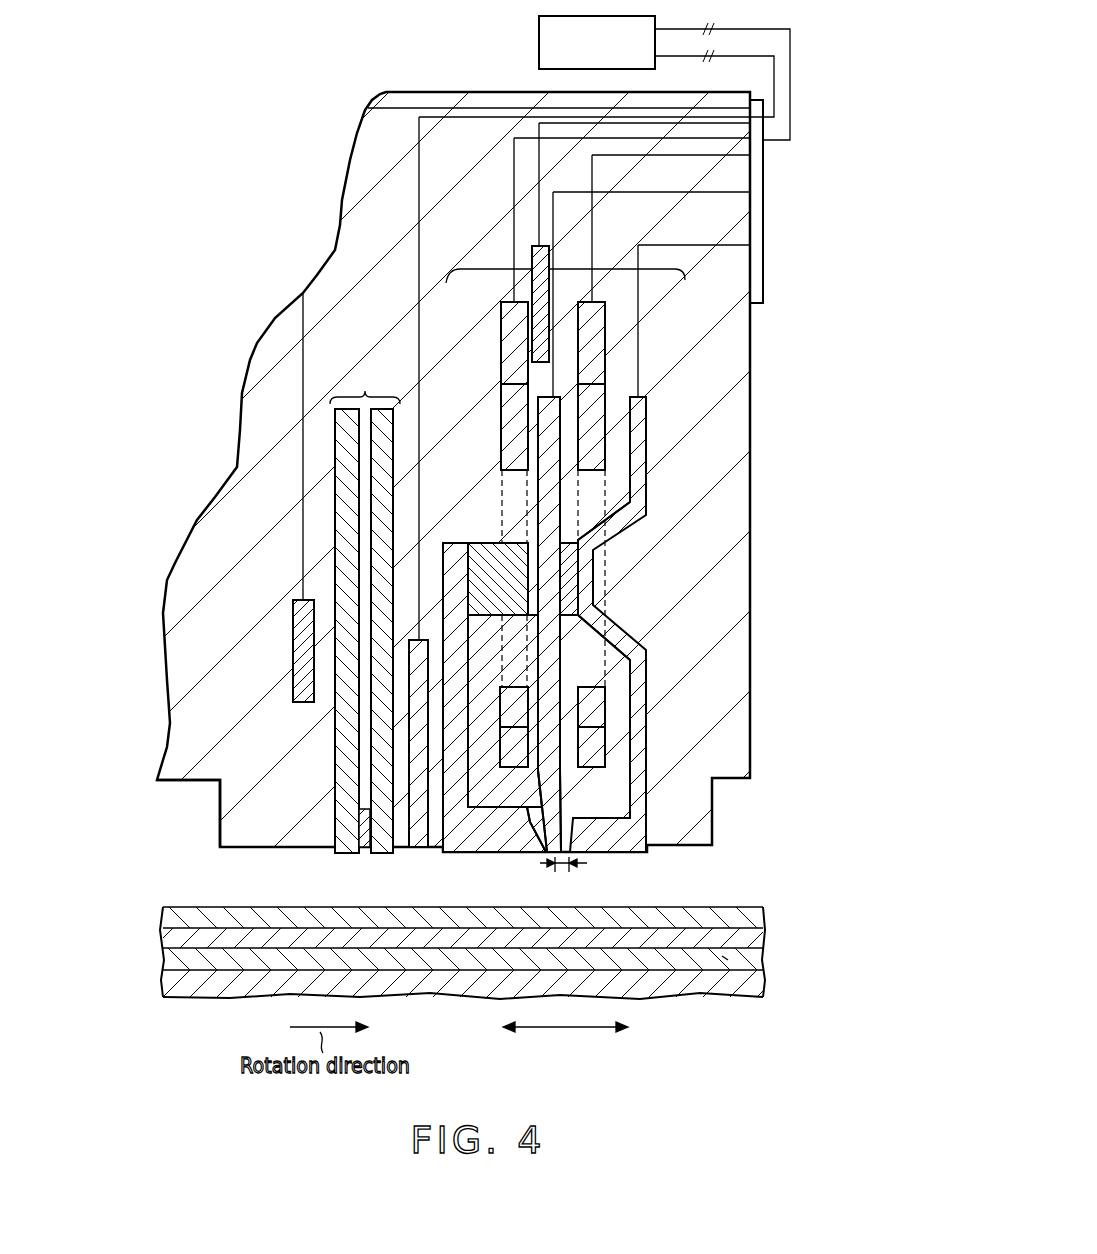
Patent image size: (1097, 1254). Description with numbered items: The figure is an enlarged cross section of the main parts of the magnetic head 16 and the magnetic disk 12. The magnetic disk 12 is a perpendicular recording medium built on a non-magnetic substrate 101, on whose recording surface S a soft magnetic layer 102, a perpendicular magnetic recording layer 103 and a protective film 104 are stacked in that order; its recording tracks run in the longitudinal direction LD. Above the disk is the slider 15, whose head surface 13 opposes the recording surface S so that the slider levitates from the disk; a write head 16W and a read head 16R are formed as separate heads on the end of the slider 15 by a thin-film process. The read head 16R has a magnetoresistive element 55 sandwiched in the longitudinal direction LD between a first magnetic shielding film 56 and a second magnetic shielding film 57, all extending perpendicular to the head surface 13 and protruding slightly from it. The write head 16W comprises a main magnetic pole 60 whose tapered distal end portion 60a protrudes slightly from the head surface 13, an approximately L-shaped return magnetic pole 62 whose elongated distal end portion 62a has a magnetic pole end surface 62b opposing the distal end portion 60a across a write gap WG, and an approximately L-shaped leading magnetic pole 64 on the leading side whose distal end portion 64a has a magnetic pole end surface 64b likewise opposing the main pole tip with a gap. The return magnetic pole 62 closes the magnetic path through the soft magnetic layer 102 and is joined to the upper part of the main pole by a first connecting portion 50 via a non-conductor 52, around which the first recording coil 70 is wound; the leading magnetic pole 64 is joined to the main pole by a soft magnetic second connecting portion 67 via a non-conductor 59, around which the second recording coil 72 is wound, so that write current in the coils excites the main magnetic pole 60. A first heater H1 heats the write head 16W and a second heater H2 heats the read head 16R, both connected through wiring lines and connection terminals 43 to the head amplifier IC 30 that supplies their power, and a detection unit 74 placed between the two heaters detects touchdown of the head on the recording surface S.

The magnetic disk 12 is at (483, 987).
The head surface 13 is at (192, 782).
The slider 15 is at (186, 714).
The magnetic head 16 is at (287, 210).
The read head 16R is at (365, 585).
The write head 16W is at (577, 267).
The head amplifier IC 30 is at (539, 40).
The connection terminals 43 is at (765, 240).
The first connecting portion 50 is at (588, 598).
The non-conductor 52 is at (575, 562).
The magnetoresistive element 55 is at (358, 827).
The first magnetic shielding film 56 is at (345, 562).
The second magnetic shielding film 57 is at (378, 515).
The non-conductor 59 is at (535, 542).
The main magnetic pole 60 is at (548, 792).
The distal end portion 60a is at (545, 852).
The return magnetic pole 62 is at (662, 660).
The distal end portion 62a is at (620, 842).
The magnetic pole end surface 62b is at (610, 818).
The leading magnetic pole 64 is at (456, 580).
The distal end portion 64a is at (478, 852).
The magnetic pole end surface 64b is at (450, 846).
The second connecting portion 67 is at (478, 555).
The first recording coil 70 is at (598, 407).
The second recording coil 72 is at (513, 420).
The detection unit 74 is at (418, 765).
The substrate 101 is at (757, 985).
The soft magnetic layer 102 is at (757, 962).
The perpendicular magnetic recording layer 103 is at (757, 940).
The protective film 104 is at (757, 918).
The first heater H1 is at (532, 290).
The second heater H2 is at (298, 645).
The longitudinal direction LD is at (565, 1042).
The recording surface S is at (725, 958).
The write gap WG is at (572, 882).